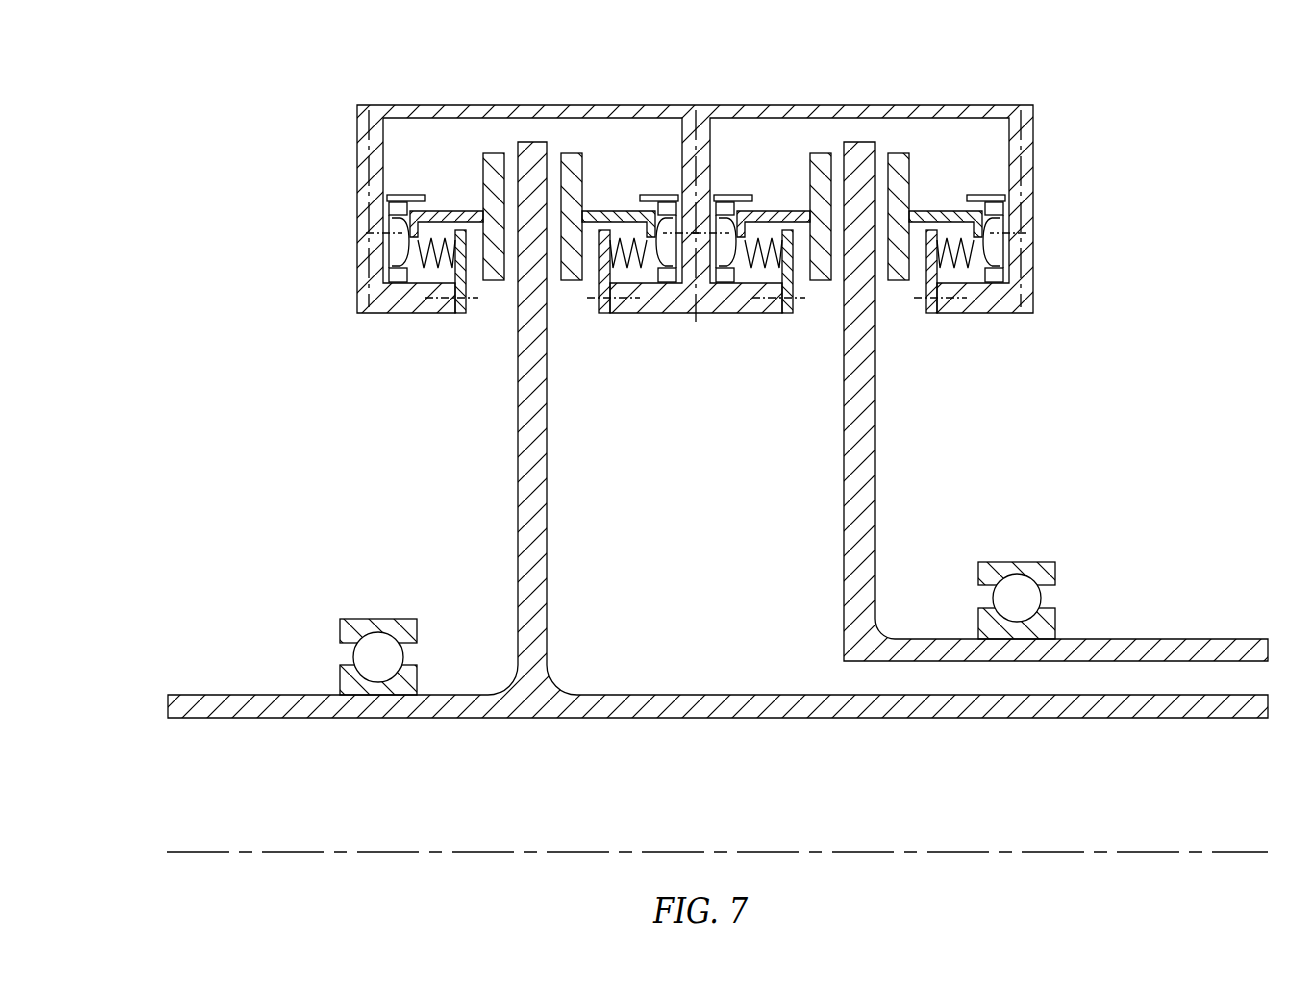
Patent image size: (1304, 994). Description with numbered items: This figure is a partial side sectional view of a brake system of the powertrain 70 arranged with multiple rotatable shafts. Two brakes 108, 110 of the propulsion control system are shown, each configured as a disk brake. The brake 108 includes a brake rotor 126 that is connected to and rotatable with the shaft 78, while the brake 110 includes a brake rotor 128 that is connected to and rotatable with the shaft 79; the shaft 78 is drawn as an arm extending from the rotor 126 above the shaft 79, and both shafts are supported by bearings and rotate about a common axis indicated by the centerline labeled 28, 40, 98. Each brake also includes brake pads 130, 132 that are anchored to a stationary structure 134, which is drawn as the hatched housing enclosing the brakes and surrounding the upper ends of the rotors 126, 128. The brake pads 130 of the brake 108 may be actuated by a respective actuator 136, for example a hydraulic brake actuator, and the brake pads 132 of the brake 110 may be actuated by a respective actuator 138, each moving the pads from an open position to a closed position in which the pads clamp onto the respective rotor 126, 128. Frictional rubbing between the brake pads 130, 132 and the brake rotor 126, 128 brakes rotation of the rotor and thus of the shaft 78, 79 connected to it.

The powertrain 70 is at (1121, 124).
The shaft 78 is at (1197, 639).
The shaft 79 is at (733, 718).
The brake 108 is at (912, 212).
The brake 110 is at (483, 212).
The brake rotor 126 is at (892, 438).
The brake rotor 128 is at (565, 507).
The brake pads 130 is at (820, 283).
The brake pads 132 is at (493, 283).
The stationary structure 134 is at (845, 105).
The actuator 136 is at (1027, 260).
The actuator 138 is at (368, 260).
The axis of rotation 28 is at (717, 826).
The axis of rotation 40 is at (717, 826).
The axis of rotation 98 is at (1258, 851).